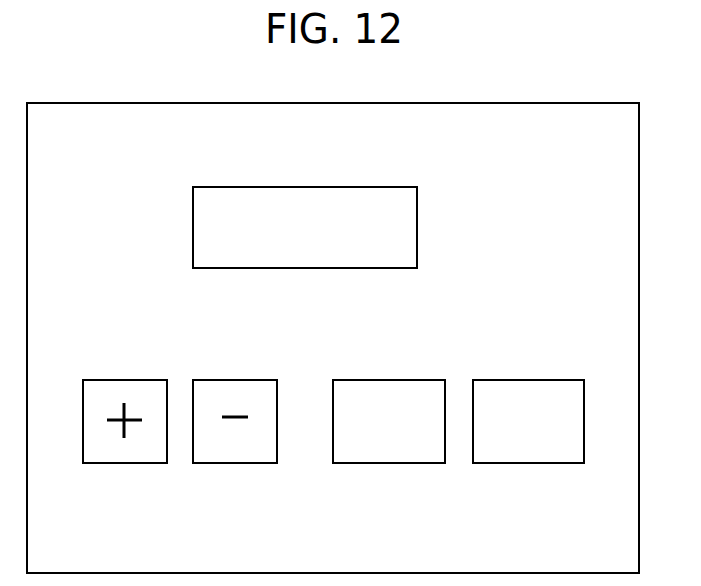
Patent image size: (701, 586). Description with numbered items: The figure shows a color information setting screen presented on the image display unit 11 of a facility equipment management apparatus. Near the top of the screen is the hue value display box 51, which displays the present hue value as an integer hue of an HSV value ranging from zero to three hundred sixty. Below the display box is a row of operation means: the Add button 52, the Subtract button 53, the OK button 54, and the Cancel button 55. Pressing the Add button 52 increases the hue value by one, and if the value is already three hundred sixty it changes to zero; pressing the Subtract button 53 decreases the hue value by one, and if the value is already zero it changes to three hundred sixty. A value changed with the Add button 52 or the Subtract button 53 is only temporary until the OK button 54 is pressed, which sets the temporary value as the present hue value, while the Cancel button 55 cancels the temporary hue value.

The image display unit 11 is at (485, 103).
The hue value display box 51 is at (378, 268).
The Add button 52 is at (127, 463).
The Subtract button 53 is at (237, 463).
The OK button 54 is at (390, 463).
The Cancel button 55 is at (530, 463).